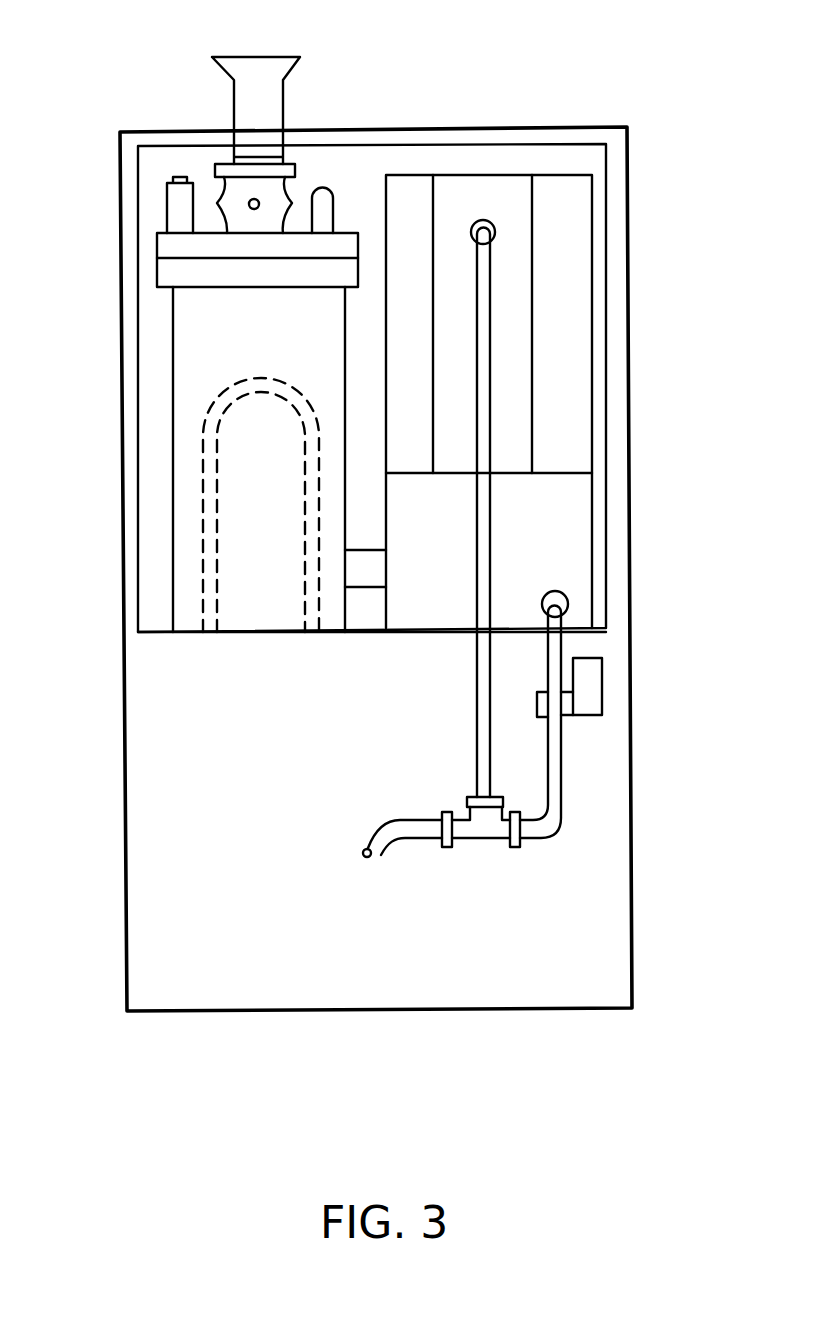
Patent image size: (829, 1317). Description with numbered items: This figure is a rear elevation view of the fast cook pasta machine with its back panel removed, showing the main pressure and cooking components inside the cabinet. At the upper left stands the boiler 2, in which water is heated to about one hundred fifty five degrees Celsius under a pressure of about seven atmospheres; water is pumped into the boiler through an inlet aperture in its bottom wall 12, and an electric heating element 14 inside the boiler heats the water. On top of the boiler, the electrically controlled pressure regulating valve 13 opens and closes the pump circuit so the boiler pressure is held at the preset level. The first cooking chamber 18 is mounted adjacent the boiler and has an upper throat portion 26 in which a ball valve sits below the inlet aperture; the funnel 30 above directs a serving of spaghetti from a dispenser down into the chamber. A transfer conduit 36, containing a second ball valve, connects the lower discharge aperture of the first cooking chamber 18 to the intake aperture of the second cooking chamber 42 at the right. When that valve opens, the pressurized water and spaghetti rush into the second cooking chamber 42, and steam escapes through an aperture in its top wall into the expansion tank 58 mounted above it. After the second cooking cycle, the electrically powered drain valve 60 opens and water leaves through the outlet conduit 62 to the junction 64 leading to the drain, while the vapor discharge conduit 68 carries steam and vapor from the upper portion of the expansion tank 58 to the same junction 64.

The boiler 2 is at (180, 335).
The bottom wall 12 is at (255, 630).
The pressure regulating valve 13 is at (323, 190).
The electric heating element 14 is at (203, 485).
The first cooking chamber 18 is at (222, 163).
The upper throat portion 26 is at (290, 227).
The funnel 30 is at (262, 55).
The transfer conduit 36 is at (357, 548).
The second cooking chamber 42 is at (587, 540).
The expansion tank 58 is at (575, 277).
The drain valve 60 is at (603, 677).
The outlet conduit 62 is at (565, 755).
The junction 64 is at (485, 840).
The vapor discharge conduit 68 is at (478, 673).